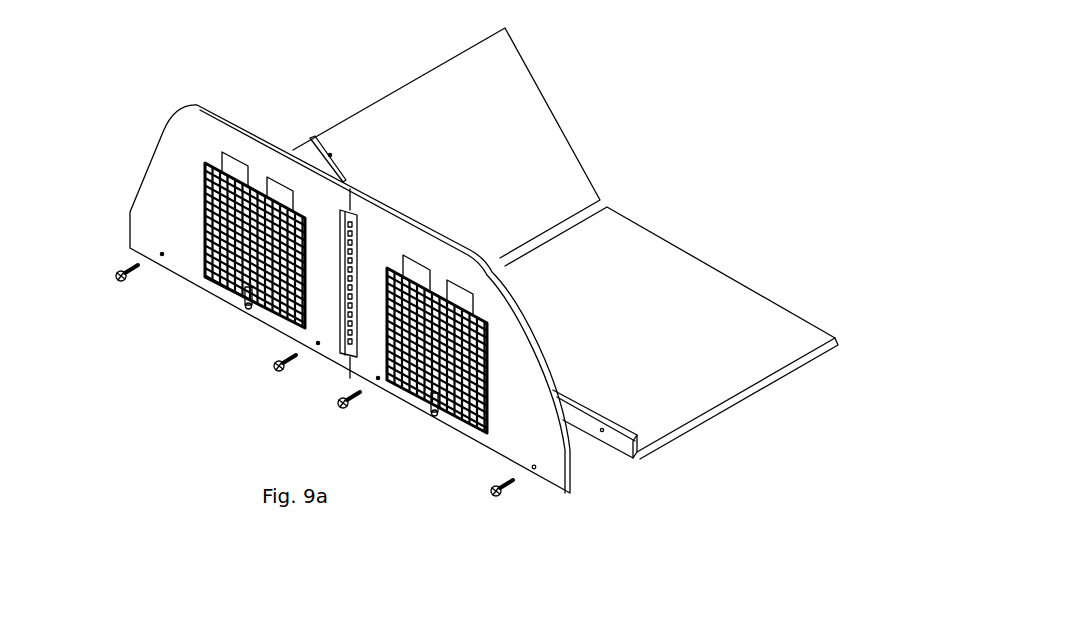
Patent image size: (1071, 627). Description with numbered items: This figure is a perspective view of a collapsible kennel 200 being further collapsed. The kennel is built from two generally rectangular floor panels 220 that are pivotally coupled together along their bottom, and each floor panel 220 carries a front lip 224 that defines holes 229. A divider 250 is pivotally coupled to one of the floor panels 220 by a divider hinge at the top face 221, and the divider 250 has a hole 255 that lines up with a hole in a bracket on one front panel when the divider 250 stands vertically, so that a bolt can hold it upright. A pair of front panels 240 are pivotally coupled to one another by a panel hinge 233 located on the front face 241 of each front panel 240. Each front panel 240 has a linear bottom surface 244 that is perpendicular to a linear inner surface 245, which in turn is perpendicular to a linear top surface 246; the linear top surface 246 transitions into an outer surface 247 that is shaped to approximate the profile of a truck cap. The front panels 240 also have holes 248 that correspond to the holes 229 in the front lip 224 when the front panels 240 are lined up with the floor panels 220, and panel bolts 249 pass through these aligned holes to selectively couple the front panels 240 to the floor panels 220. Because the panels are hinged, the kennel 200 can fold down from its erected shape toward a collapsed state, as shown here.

The collapsible kennel 200 is at (737, 87).
The floor panel 220 is at (745, 258).
The top face 221 is at (782, 330).
The front lip 224 is at (640, 455).
The holes 229 is at (603, 429).
The panel hinge 233 is at (343, 349).
The front panel 240 is at (173, 95).
The front face 241 is at (142, 217).
The linear bottom surface 244 is at (197, 287).
The linear inner surface 245 is at (347, 368).
The linear top surface 246 is at (243, 123).
The outer surface 247 is at (146, 163).
The holes 248 is at (162, 254).
The panel bolts 249 is at (115, 278).
The divider 250 is at (542, 88).
The hole 255 is at (330, 155).